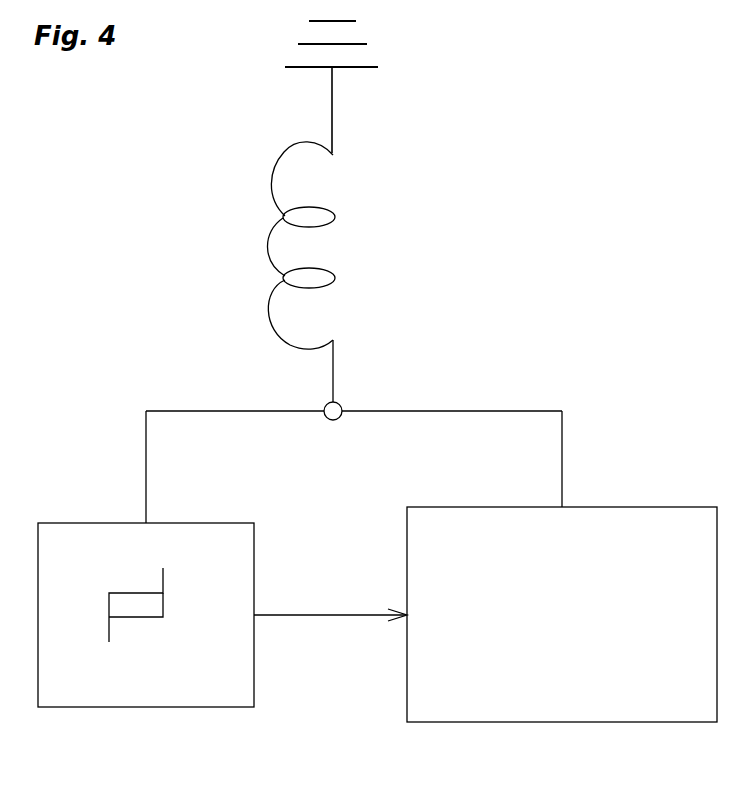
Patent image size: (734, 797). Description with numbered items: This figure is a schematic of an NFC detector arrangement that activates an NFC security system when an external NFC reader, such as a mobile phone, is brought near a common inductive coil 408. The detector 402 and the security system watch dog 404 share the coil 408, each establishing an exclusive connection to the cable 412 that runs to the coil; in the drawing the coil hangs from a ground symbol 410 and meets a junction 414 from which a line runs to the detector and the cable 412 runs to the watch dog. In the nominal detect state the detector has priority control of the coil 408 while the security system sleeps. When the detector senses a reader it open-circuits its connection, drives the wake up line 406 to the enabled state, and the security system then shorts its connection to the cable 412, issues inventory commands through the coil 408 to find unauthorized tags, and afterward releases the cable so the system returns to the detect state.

The detector 402 is at (104, 707).
The watch dog 404 is at (510, 722).
The wake up line 406 is at (293, 616).
The common inductive coil 408 is at (288, 210).
The antenna / ground terminal 410 is at (368, 68).
The cable 412 is at (545, 408).
The connection node / line to detector 414 is at (168, 410).